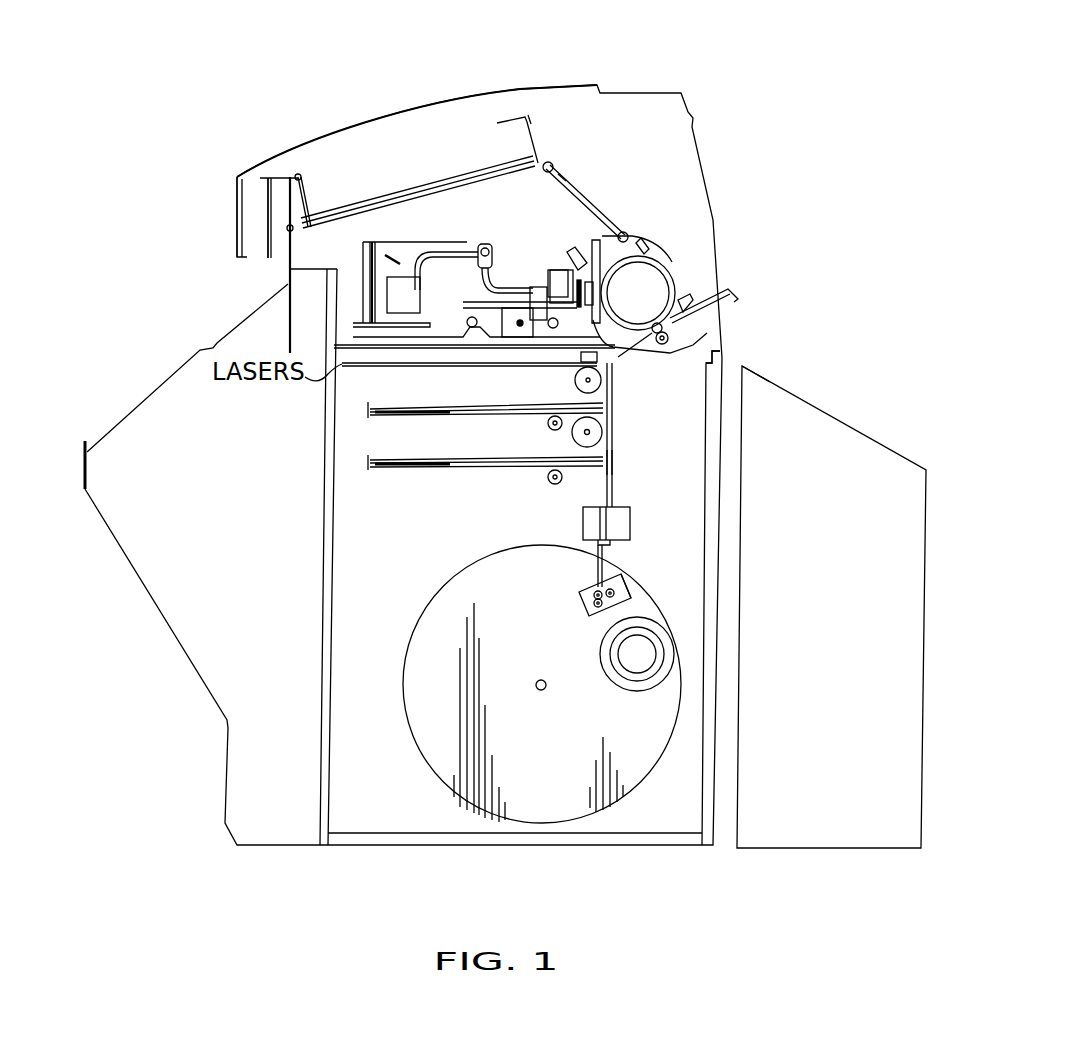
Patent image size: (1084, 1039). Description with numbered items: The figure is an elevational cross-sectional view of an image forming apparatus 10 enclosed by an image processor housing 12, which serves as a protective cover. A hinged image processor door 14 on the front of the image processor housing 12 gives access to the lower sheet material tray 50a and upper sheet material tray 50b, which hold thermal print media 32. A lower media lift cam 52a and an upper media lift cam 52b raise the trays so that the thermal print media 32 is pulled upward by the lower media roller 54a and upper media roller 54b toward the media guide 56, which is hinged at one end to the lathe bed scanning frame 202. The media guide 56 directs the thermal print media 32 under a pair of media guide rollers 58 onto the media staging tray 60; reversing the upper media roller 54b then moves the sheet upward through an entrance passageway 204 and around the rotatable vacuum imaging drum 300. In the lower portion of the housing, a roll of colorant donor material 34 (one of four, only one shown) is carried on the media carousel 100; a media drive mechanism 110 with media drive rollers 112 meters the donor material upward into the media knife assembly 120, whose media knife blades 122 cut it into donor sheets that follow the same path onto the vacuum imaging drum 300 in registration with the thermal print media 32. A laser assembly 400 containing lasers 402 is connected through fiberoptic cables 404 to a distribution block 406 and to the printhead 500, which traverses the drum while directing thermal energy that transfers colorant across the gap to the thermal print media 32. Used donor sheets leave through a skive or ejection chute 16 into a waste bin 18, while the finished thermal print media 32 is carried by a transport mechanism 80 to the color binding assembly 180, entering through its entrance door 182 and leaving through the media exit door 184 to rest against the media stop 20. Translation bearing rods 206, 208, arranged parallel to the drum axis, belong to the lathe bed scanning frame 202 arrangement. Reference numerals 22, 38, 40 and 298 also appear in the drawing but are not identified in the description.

The image forming apparatus 10 is at (403, 430).
The image processor housing 12 is at (298, 139).
The image processor door 14 is at (174, 664).
The skive or ejection chute 16 is at (736, 297).
The waste bin 18 is at (815, 407).
The media stop 20 is at (98, 443).
The side panel 22 is at (187, 368).
The thermal print media 32 is at (440, 403).
The colorant donor material 34 is at (726, 681).
The take-up spool 38 is at (726, 681).
The spool drive 40 is at (637, 654).
The lower sheet material tray 50a is at (368, 470).
The upper sheet material tray 50b is at (368, 458).
The lower media lift cam 52a is at (555, 485).
The upper media lift cam 52b is at (548, 432).
The lower media roller 54a is at (613, 445).
The upper media roller 54b is at (606, 400).
The media guide 56 is at (620, 358).
The media guide rollers 58 is at (575, 380).
The media staging tray 60 is at (400, 355).
The transport mechanism 80 is at (622, 206).
The media carousel 100 is at (424, 764).
The media drive mechanism 110 is at (628, 590).
The media drive rollers 112 is at (585, 605).
The media knife assembly 120 is at (630, 515).
The media knife blades 122 is at (610, 547).
The color binding assembly 180 is at (487, 172).
The entrance door 182 is at (532, 142).
The media exit door 184 is at (306, 192).
The lathe bed scanning frame 202 is at (743, 365).
The entrance passageway 204 is at (692, 338).
The translation bearing rod 206 is at (368, 410).
The translation bearing rod 208 is at (500, 357).
The arm slot 298 is at (600, 208).
The vacuum imaging drum 300 is at (640, 292).
The laser assembly 400 is at (285, 242).
The lasers 402 is at (388, 299).
The fiberoptic cables 404 is at (434, 240).
The distribution block 406 is at (490, 245).
The printhead 500 is at (622, 233).